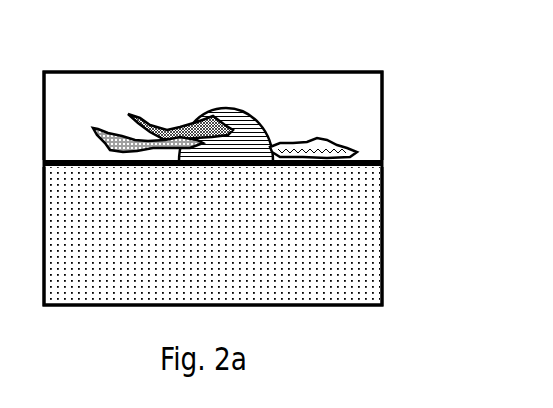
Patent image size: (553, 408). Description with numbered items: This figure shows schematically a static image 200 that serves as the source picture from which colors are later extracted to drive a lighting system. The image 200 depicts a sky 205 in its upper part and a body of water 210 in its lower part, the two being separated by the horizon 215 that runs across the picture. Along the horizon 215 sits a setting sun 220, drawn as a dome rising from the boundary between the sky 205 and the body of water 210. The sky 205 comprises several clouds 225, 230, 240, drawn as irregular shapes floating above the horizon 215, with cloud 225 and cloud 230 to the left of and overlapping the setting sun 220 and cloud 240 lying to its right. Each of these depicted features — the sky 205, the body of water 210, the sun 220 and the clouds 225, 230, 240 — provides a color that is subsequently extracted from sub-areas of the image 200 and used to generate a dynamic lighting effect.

The static image 200 is at (397, 65).
The sky 205 is at (342, 130).
The body of water 210 is at (343, 260).
The horizon 215 is at (343, 168).
The setting sun 220 is at (248, 137).
The cloud 225 is at (112, 130).
The cloud 230 is at (152, 121).
The cloud 240 is at (325, 147).